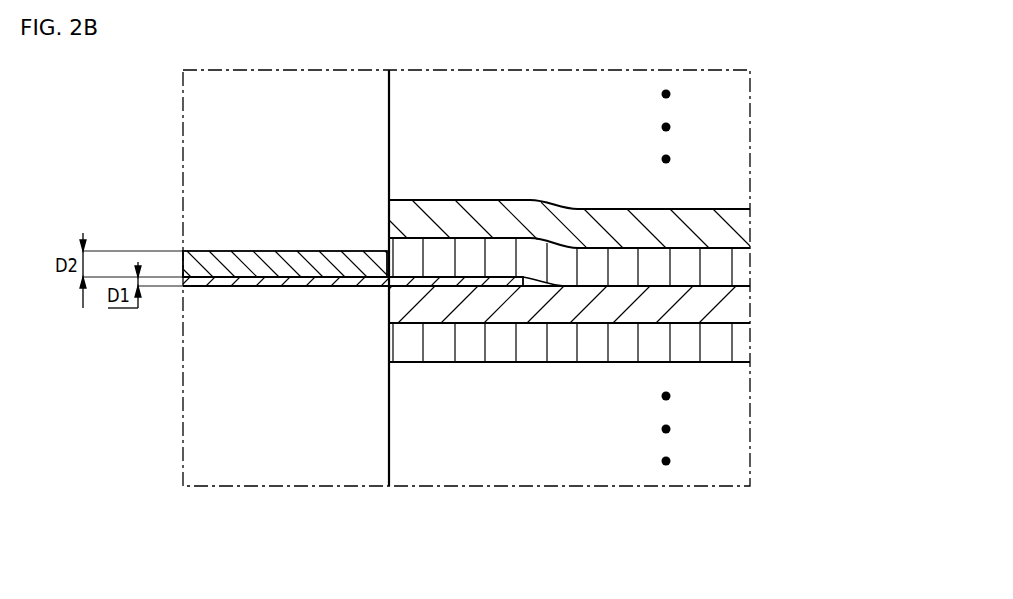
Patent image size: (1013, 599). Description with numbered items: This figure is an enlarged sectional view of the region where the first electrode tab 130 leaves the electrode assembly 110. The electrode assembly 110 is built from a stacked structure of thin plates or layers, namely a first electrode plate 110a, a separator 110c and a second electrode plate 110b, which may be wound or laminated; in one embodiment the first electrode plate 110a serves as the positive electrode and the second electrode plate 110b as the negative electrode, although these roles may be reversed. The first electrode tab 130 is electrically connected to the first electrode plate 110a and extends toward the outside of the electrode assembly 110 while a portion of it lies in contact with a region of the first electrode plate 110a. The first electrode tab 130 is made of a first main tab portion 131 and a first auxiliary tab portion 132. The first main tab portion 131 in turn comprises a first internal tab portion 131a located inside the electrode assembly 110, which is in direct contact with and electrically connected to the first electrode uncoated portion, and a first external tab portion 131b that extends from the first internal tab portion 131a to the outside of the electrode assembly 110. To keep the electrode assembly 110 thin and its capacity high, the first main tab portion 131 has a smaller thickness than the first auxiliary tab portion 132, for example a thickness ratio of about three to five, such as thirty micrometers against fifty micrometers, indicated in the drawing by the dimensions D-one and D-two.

The electrode assembly 110 is at (518, 322).
The first electrode plate 110a is at (507, 313).
The second electrode plate 110b is at (602, 239).
The separator 110c is at (715, 350).
The first electrode tab 130 is at (239, 224).
The first main tab portion 131 is at (277, 347).
The first internal tab portion 131a is at (448, 279).
The first external tab portion 131b is at (308, 287).
The first auxiliary tab portion 132 is at (237, 265).